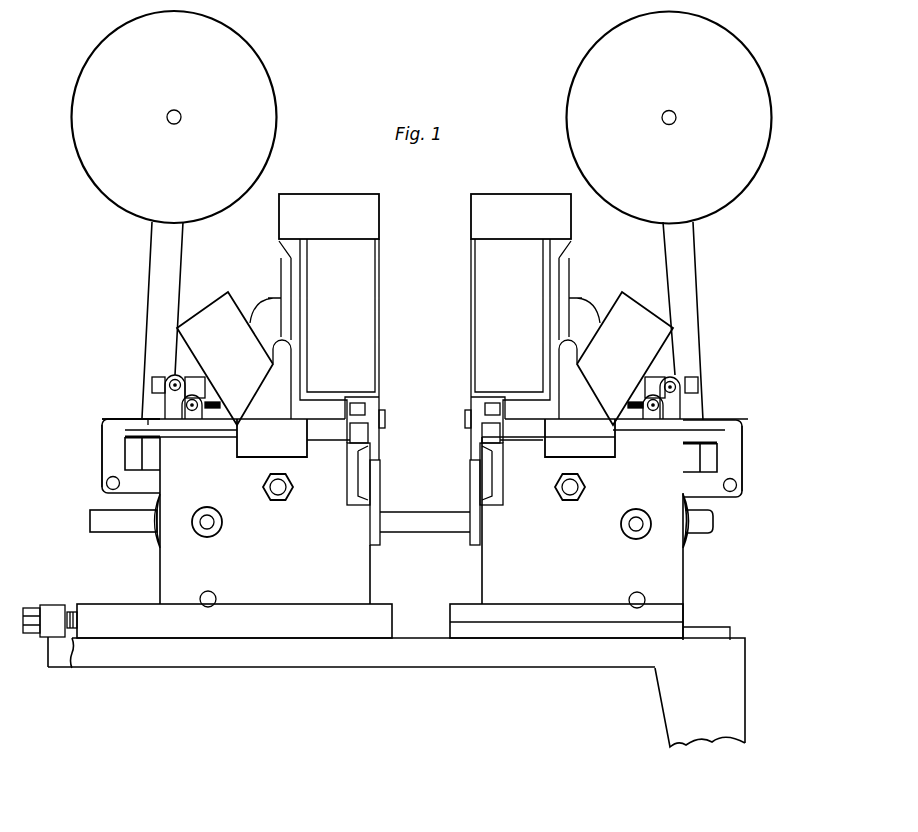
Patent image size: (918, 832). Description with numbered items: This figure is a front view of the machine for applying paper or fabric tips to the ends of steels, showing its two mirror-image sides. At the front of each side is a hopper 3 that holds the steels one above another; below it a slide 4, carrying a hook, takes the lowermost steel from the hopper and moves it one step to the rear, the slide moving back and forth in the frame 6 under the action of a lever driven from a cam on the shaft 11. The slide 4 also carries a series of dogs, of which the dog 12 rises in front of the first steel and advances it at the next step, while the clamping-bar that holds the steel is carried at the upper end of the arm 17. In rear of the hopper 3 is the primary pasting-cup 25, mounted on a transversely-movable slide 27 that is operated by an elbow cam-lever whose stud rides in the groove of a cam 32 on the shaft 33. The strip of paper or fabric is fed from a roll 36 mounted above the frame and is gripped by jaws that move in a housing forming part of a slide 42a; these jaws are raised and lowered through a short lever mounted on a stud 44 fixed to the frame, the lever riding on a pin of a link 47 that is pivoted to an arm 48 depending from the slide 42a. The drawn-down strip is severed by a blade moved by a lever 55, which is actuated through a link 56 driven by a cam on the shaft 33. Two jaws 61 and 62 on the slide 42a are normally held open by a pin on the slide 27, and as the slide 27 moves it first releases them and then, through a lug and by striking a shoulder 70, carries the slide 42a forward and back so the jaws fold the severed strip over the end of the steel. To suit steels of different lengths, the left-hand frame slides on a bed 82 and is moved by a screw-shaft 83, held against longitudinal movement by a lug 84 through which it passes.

The hopper 3 is at (425, 327).
The slide 4 is at (360, 476).
The frame 6 is at (425, 494).
The shaft 11 is at (409, 520).
The dog 12 is at (385, 421).
The arm 17 is at (343, 433).
The primary pasting-cup 25 is at (425, 358).
The transversely-movable slide 27 is at (150, 419).
The cam 32 is at (157, 538).
The shaft 33 is at (215, 500).
The roll 36 is at (422, 117).
The slide 42a is at (753, 435).
The stud 44 is at (263, 487).
The link 47 is at (422, 484).
The arm 48 is at (110, 457).
The lever 55 is at (185, 382).
The link 56 is at (164, 388).
The jaw 61 is at (633, 397).
The jaw 62 is at (217, 413).
The shoulder 70 is at (152, 427).
The bed 82 is at (150, 603).
The screw-shaft 83 is at (75, 608).
The lug 84 is at (55, 605).